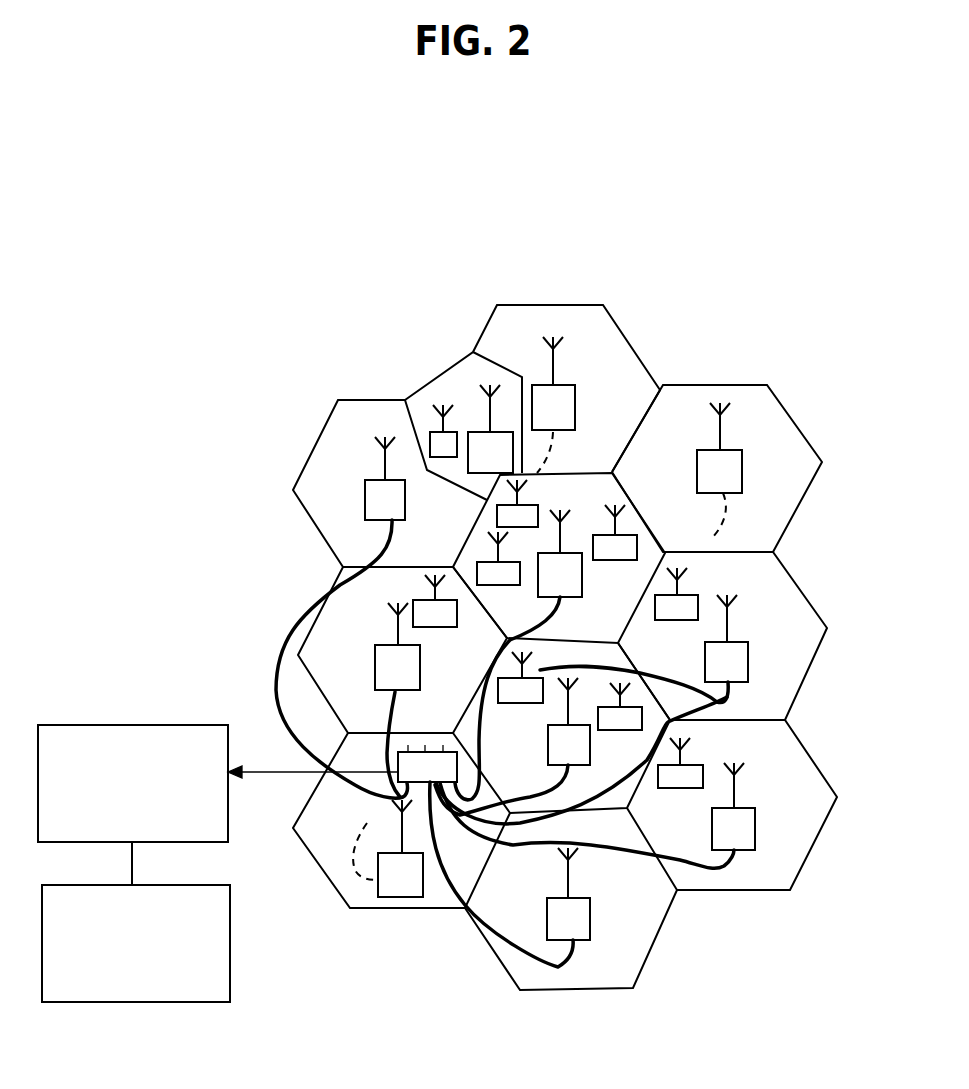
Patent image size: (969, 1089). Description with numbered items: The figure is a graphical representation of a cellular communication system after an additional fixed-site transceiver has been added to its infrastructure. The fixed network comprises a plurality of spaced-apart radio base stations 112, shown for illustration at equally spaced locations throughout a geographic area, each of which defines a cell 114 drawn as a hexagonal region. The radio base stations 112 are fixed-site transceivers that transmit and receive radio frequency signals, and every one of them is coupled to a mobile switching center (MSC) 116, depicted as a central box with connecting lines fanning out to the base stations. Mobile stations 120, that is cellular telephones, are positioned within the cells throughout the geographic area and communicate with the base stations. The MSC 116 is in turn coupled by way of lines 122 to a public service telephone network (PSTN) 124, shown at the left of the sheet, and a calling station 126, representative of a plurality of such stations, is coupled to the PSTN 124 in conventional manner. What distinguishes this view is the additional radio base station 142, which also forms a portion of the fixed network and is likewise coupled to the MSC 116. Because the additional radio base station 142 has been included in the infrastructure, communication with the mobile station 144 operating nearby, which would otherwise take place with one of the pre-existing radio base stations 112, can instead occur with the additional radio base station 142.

The radio base station 112 is at (538, 555).
The cell 114 is at (350, 397).
The mobile switching center (MSC) 116 is at (430, 750).
The mobile station 120 is at (537, 507).
The lines 122 is at (265, 768).
The public service telephone network (PSTN) 124 is at (115, 722).
The calling station 126 is at (153, 1000).
The additional radio base station 142 is at (490, 410).
The mobile station 144 is at (433, 430).